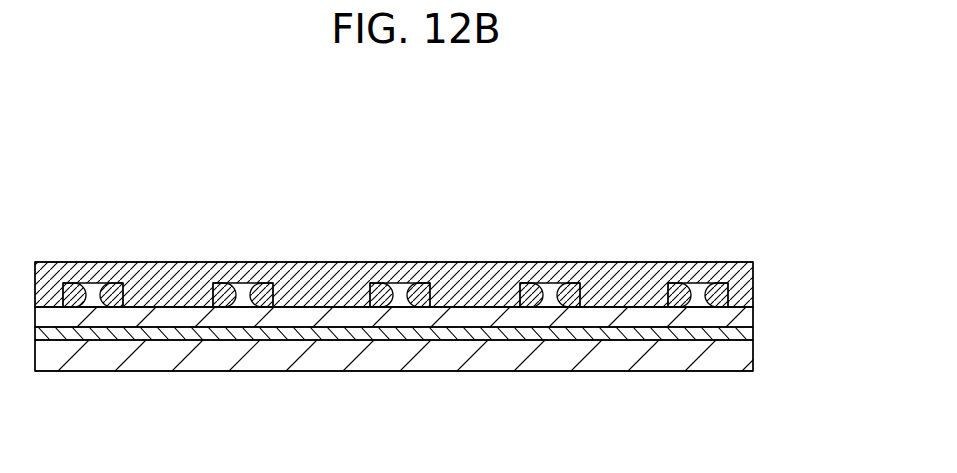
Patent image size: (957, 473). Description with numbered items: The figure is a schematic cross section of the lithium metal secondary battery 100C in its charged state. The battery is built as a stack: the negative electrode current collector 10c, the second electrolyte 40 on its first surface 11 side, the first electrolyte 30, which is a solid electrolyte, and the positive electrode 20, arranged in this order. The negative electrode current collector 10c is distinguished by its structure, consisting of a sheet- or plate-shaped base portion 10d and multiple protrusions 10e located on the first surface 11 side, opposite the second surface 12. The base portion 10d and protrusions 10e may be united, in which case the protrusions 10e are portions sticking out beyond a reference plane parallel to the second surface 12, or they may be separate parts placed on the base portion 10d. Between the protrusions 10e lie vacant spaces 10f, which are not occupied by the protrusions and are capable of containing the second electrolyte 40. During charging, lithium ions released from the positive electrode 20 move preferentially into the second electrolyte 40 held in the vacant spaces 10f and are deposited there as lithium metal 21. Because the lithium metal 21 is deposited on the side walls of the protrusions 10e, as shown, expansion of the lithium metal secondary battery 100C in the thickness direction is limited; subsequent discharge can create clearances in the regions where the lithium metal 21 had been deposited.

The lithium metal secondary battery 100C is at (447, 122).
The negative electrode current collector 10c is at (836, 221).
The base portion 10d is at (745, 270).
The protrusions 10e is at (743, 292).
The vacant spaces 10f is at (93, 290).
The first surface 11 is at (167, 308).
The second surface 12 is at (175, 260).
The positive electrode 20 is at (742, 358).
The lithium metal 21 is at (74, 288).
The first electrolyte 30 is at (733, 334).
The second electrolyte 40 is at (743, 319).